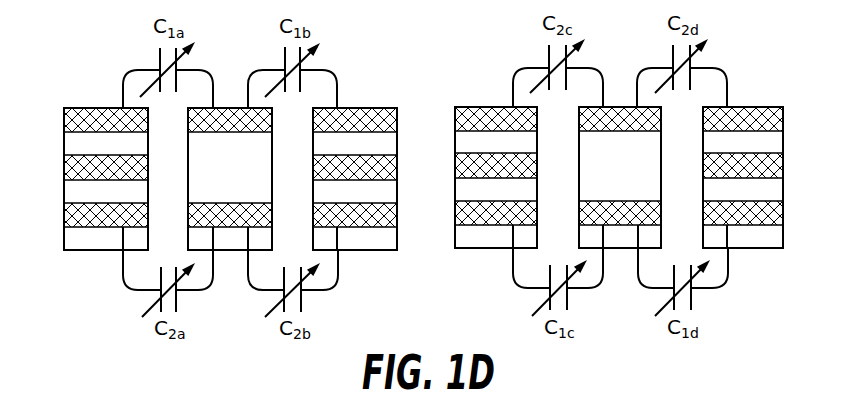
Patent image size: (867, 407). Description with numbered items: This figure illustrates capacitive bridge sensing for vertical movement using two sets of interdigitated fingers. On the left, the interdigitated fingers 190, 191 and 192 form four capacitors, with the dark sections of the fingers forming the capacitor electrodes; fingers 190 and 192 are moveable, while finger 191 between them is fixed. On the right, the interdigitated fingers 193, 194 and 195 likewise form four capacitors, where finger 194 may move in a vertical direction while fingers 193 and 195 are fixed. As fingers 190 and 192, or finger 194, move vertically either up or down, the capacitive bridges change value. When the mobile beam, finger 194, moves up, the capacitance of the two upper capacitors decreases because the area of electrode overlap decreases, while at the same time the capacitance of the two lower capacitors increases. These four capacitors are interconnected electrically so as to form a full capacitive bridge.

The interdigitated finger 190 is at (64, 169).
The interdigitated finger 191 is at (231, 107).
The interdigitated finger 192 is at (397, 167).
The interdigitated finger 193 is at (455, 213).
The interdigitated finger 194 is at (619, 106).
The interdigitated finger 195 is at (784, 165).